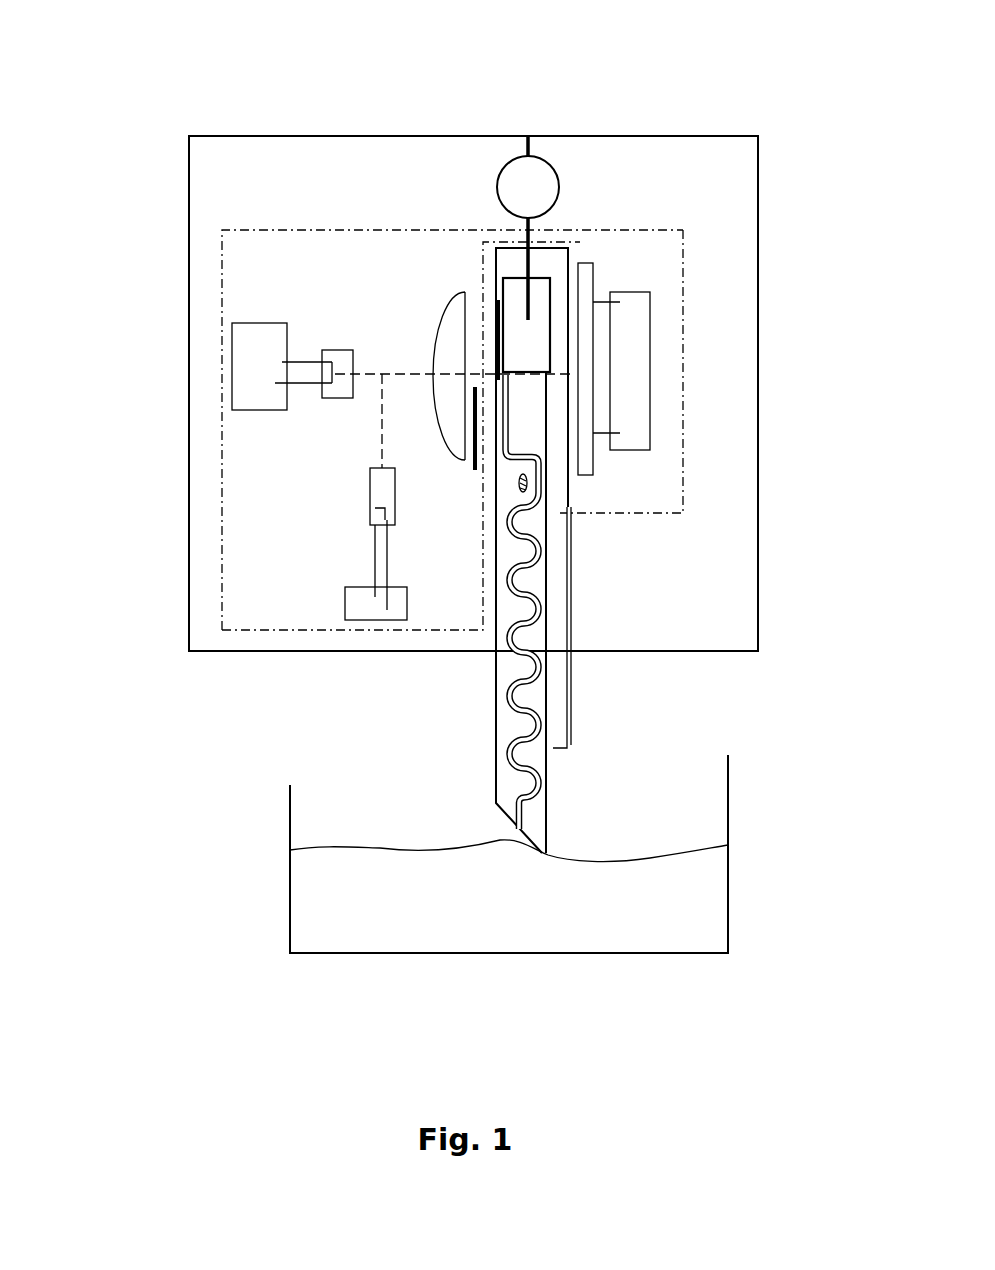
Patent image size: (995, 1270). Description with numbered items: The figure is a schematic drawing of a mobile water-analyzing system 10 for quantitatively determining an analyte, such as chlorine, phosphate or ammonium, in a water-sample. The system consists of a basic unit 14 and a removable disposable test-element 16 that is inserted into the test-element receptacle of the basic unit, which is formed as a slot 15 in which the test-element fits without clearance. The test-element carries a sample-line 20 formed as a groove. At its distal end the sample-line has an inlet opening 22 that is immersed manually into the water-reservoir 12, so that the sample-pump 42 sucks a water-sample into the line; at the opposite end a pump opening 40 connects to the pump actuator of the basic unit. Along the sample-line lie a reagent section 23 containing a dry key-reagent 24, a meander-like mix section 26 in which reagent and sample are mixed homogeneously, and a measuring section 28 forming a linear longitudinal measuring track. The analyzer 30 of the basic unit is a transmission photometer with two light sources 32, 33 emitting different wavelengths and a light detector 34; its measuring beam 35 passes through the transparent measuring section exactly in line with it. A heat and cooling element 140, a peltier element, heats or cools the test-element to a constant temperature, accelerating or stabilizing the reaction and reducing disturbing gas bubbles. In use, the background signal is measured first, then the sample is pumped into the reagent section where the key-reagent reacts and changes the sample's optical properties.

The mobile water-analyzing system 10 is at (128, 193).
The water-reservoir 12 is at (343, 897).
The basic unit 14 is at (176, 494).
The slot 15 is at (562, 497).
The test-element 16 is at (486, 688).
The sample-line 20 is at (541, 797).
The inlet opening 22 is at (520, 826).
The reagent section 23 is at (568, 296).
The key-reagent 24 is at (552, 278).
The mix section 26 is at (573, 668).
The measuring section 28 is at (546, 388).
The analyzer 30 is at (215, 299).
The light source 32 is at (348, 400).
The light source 33 is at (378, 478).
The light detector 34 is at (587, 343).
The measuring beam 35 is at (358, 398).
The pump opening 40 is at (555, 342).
The sample-pump 42 is at (556, 172).
The heat and cooling element 140 is at (496, 330).